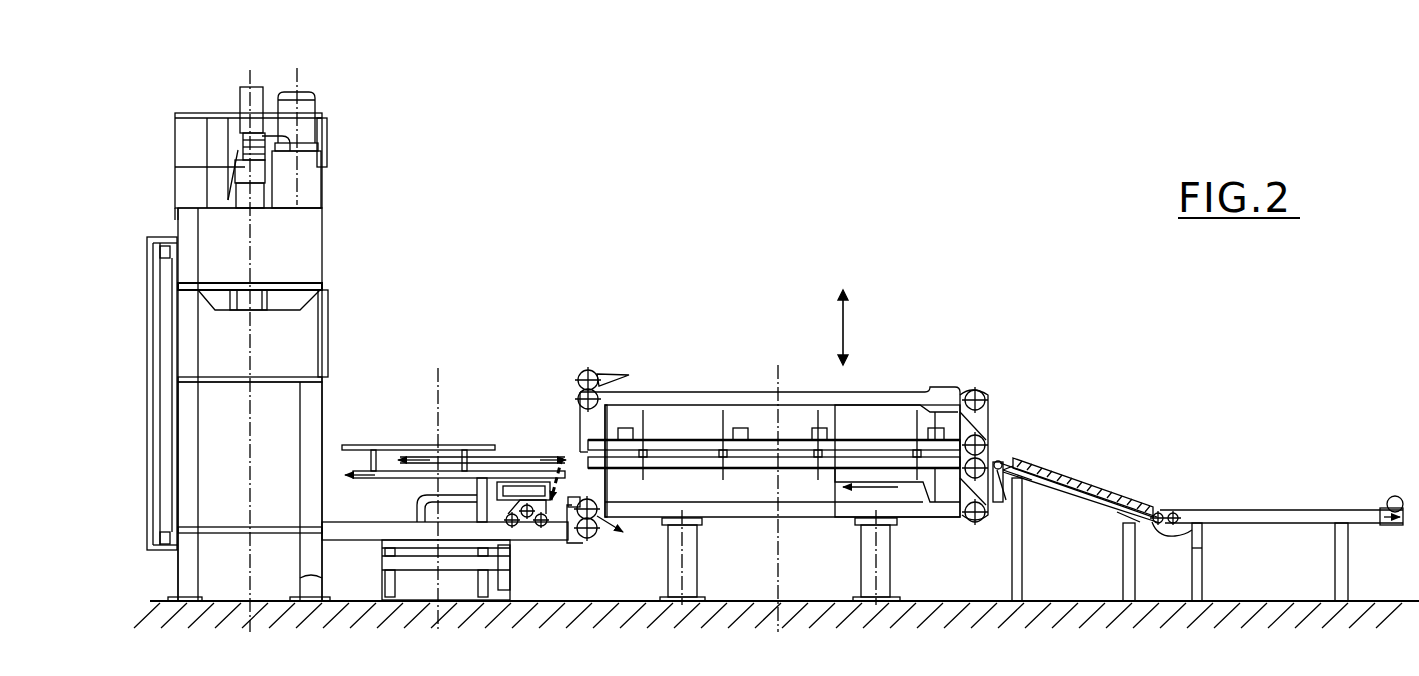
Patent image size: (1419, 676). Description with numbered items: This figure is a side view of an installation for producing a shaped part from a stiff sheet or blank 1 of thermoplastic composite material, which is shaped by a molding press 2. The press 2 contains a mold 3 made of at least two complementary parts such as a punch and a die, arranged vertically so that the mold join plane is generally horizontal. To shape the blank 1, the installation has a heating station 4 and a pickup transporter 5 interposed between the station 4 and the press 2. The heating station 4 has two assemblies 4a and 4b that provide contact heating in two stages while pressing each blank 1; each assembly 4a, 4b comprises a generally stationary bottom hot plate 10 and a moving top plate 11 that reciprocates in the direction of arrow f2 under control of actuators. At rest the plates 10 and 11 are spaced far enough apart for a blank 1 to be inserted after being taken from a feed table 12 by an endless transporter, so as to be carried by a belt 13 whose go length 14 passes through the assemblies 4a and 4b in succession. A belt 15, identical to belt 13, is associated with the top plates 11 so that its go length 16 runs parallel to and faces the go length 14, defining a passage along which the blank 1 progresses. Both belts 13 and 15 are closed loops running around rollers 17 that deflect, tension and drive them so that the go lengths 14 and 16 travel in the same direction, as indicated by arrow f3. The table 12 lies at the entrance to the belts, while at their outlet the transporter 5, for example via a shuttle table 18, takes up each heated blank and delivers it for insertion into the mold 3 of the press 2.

The stiff sheet or blank 1 is at (1201, 512).
The molding press 2 is at (275, 350).
The mold 3 is at (280, 470).
The heating station 4 is at (813, 438).
The heating assembly 4a is at (893, 428).
The heating assembly 4b is at (662, 366).
The pickup transporter 5 is at (451, 487).
The bottom hot plate 10 is at (757, 462).
The moving top plate 11 is at (760, 392).
The feed table 12 is at (1081, 503).
The belt 13 is at (992, 512).
The go length 14 is at (687, 460).
The belt 15 is at (997, 410).
The go length 16 is at (685, 440).
The rollers 17 is at (611, 503).
The shuttle table 18 is at (520, 526).
The arrow f2 is at (845, 326).
The arrow f3 is at (880, 489).